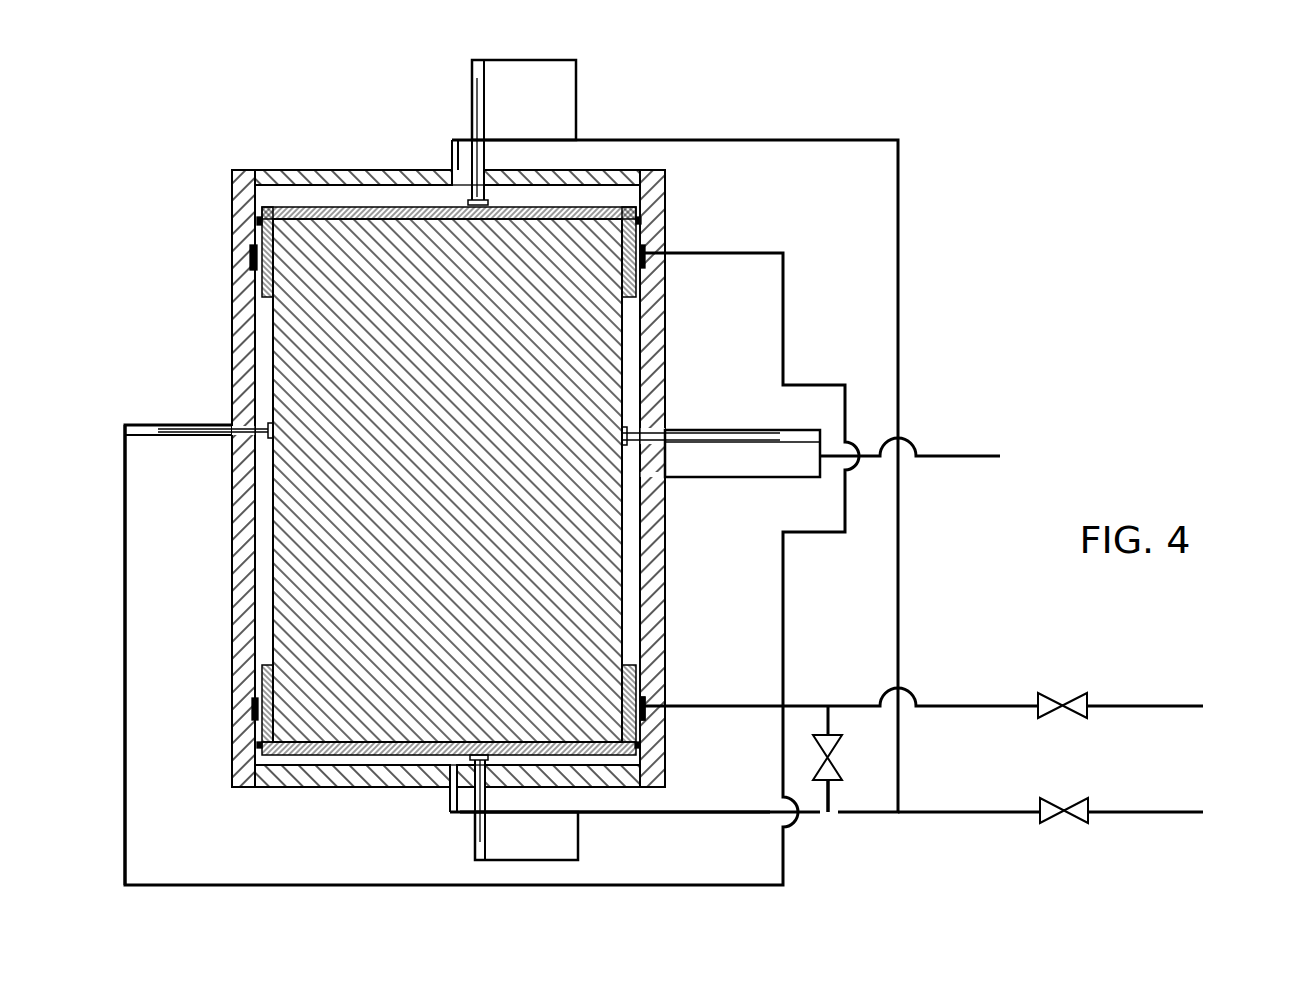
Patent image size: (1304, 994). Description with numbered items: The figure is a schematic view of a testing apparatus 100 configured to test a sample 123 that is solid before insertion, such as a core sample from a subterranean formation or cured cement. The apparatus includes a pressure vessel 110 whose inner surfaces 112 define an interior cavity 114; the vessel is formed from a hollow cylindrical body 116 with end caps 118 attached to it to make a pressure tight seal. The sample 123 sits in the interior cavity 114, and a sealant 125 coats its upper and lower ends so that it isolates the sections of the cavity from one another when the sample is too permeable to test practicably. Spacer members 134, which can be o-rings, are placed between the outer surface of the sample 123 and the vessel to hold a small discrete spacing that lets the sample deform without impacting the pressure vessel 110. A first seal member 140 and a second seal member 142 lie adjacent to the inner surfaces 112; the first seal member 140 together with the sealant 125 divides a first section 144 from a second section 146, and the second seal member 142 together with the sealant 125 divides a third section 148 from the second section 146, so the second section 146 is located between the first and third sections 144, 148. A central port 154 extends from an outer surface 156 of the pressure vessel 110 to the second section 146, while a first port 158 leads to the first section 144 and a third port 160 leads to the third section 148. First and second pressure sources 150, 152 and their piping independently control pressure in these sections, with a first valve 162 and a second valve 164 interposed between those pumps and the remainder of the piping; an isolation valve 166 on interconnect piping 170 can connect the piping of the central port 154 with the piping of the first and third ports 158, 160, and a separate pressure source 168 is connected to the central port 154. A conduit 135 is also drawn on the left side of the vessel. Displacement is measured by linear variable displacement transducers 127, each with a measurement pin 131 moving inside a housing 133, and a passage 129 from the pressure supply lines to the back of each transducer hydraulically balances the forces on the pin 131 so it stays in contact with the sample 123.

The testing apparatus 100 is at (988, 229).
The pressure vessel 110 is at (183, 357).
The inner surfaces 112 is at (253, 198).
The interior cavity 114 is at (328, 197).
The hollow cylindrical body 116 is at (233, 493).
The end caps 118 is at (377, 170).
The sample 123 is at (270, 541).
The sealant 125 is at (240, 285).
The linear variable displacement transducer 127 is at (478, 94).
The passage 129 is at (577, 93).
The measurement pin 131 is at (483, 198).
The housing 133 is at (482, 128).
The spacer members 134 is at (257, 221).
The conduit 135 is at (126, 660).
The first seal member 140 is at (648, 262).
The second seal member 142 is at (648, 700).
The first section 144 is at (613, 198).
The second section 146 is at (663, 392).
The third section 148 is at (645, 722).
The first pressure source 150 is at (968, 685).
The second pressure source 152 is at (1093, 790).
The central port 154 is at (667, 478).
The outer surface 156 is at (665, 610).
The first port 158 is at (450, 168).
The third port 160 is at (447, 787).
The first valve 162 is at (1083, 692).
The second valve 164 is at (1047, 820).
The isolation valve 166 is at (831, 758).
The pressure source 168 is at (967, 450).
The interconnect piping 170 is at (833, 792).